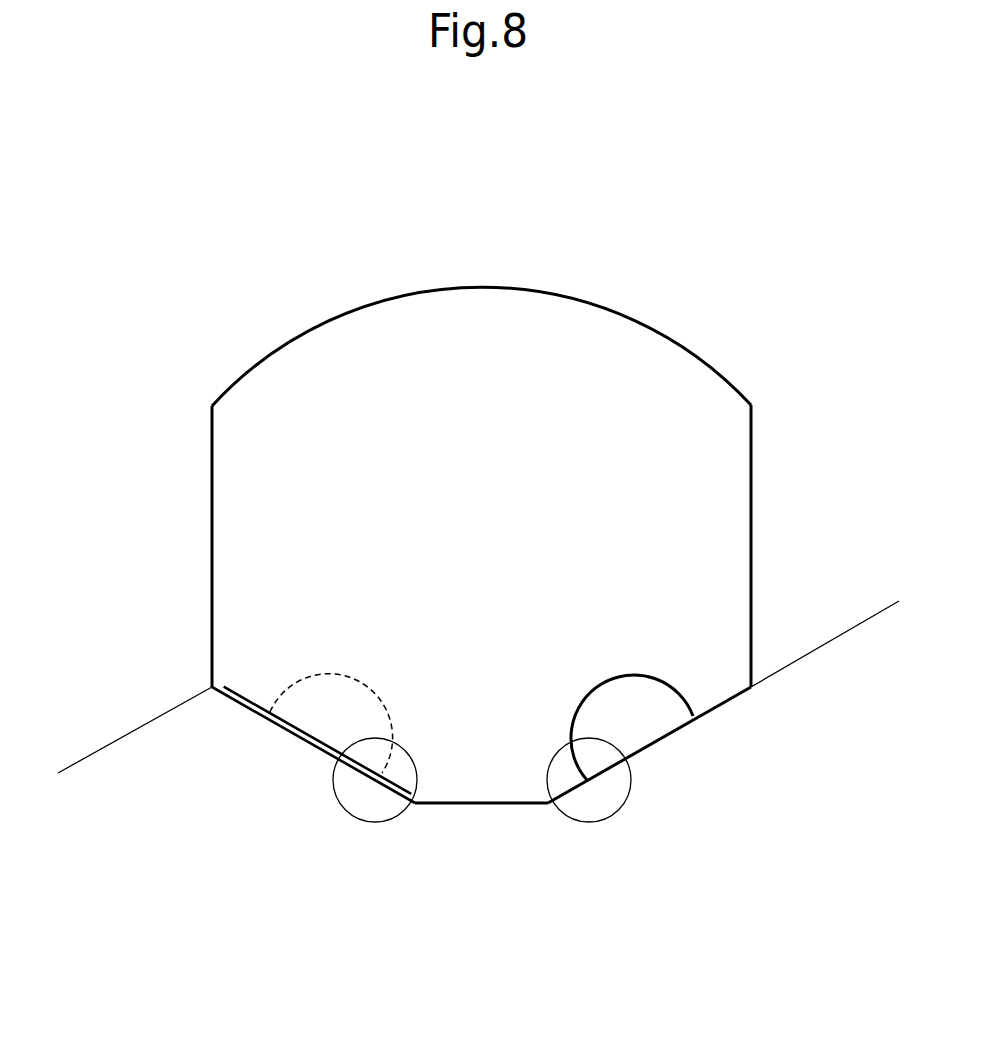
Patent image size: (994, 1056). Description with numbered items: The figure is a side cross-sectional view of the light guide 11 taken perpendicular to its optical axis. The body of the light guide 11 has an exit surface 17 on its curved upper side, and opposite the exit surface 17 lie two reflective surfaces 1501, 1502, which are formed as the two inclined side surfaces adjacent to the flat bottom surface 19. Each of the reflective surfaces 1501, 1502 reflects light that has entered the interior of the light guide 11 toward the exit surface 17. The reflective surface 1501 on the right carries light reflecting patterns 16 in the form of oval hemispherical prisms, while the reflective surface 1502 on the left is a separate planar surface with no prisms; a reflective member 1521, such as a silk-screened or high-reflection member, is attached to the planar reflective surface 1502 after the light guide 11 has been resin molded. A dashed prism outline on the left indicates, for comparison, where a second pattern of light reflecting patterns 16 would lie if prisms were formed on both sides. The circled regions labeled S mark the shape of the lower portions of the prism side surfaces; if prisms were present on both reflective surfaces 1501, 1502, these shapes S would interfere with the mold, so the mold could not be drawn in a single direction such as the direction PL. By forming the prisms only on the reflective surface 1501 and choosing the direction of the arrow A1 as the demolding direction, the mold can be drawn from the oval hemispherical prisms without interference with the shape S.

The light guide 11 is at (500, 564).
The exit surface 17 is at (578, 297).
The bottom surface 19 is at (487, 804).
The reflective surface 1501 is at (723, 702).
The reflective surface 1502 is at (238, 703).
The reflective member 1521 is at (300, 735).
The light reflecting patterns 16 is at (342, 687).
The shape of lower portions of side surfaces of the oval hemispherical prisms S is at (372, 822).
The direction PL is at (815, 687).
The arrow A1 is at (50, 734).